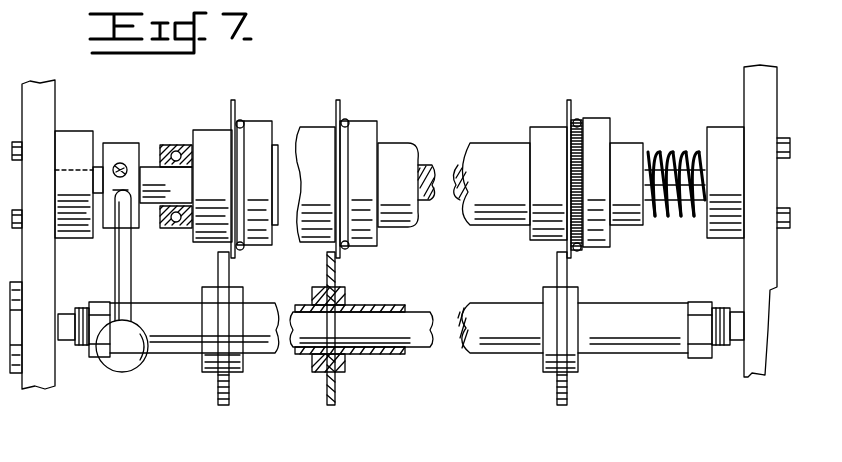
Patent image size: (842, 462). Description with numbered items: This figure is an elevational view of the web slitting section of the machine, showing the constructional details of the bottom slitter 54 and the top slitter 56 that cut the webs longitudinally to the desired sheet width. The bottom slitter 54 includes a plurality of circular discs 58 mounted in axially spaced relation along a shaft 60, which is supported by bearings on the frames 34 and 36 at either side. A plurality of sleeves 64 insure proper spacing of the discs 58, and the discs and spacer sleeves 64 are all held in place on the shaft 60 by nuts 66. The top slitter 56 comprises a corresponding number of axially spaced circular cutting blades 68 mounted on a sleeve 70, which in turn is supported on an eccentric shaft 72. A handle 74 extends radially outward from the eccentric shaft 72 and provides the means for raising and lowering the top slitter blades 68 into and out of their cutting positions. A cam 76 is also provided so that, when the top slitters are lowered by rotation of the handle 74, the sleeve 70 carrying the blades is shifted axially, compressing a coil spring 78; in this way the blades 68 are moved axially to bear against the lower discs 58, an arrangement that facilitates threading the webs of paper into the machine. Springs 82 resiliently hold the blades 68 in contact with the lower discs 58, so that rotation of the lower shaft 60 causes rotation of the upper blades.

The frame 34 is at (745, 378).
The frame 36 is at (55, 388).
The bottom slitter 54 is at (528, 354).
The top slitter 56 is at (405, 138).
The circular disc 58 is at (228, 405).
The shaft 60 is at (632, 356).
The sleeve 64 is at (262, 304).
The nut 66 is at (100, 303).
The circular cutting blade 68 is at (236, 103).
The sleeve 70 is at (516, 227).
The eccentric shaft 72 is at (150, 166).
The handle 74 is at (147, 364).
The cam 76 is at (101, 232).
The coil spring 78 is at (672, 152).
The spring 82 is at (240, 250).